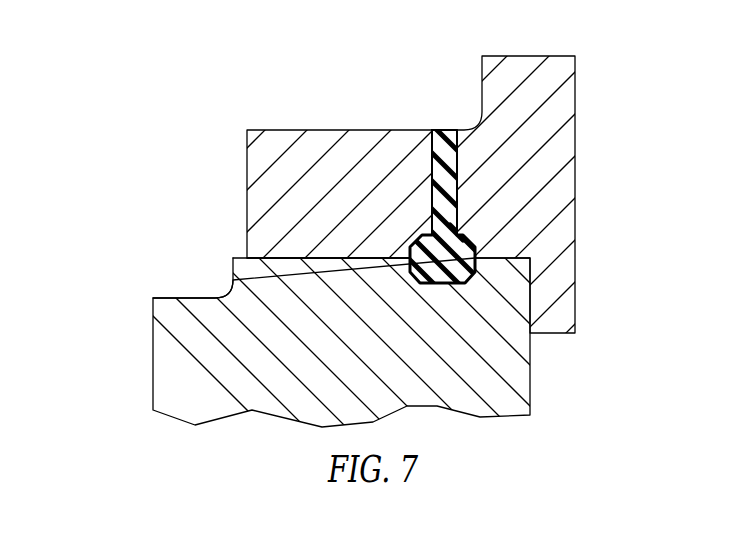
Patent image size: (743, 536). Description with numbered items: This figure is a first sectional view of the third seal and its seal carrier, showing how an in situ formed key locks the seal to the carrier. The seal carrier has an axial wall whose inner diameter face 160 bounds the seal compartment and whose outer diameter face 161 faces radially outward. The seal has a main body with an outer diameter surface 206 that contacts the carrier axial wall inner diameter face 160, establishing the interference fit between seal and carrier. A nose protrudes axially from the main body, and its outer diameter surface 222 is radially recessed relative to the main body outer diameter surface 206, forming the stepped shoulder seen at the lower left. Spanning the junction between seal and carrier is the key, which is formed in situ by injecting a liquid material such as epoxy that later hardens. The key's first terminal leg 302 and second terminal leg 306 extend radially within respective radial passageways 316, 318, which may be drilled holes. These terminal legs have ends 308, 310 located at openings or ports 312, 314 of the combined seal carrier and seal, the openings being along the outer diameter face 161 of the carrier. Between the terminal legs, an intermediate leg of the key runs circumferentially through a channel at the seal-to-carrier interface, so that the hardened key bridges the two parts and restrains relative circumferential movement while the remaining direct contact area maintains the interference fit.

The inner diameter face of axial wall 160 is at (315, 260).
The outer diameter face of axial wall 161 is at (274, 130).
The outer diameter surface of main body 206 is at (297, 258).
The outer diameter surface of nose 222 is at (193, 297).
The first terminal leg 302 is at (483, 198).
The second terminal leg 306 is at (457, 145).
The end of first terminal leg 308 is at (415, 85).
The end of second terminal leg 310 is at (443, 130).
The opening 312 is at (352, 153).
The opening 314 is at (421, 118).
The radial passageway 316 is at (511, 202).
The radial passageway 318 is at (462, 177).